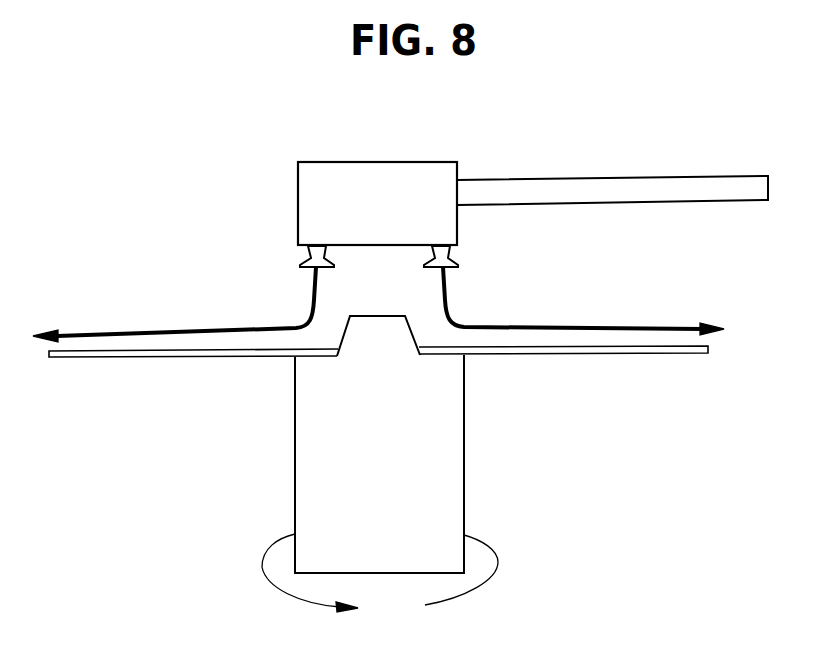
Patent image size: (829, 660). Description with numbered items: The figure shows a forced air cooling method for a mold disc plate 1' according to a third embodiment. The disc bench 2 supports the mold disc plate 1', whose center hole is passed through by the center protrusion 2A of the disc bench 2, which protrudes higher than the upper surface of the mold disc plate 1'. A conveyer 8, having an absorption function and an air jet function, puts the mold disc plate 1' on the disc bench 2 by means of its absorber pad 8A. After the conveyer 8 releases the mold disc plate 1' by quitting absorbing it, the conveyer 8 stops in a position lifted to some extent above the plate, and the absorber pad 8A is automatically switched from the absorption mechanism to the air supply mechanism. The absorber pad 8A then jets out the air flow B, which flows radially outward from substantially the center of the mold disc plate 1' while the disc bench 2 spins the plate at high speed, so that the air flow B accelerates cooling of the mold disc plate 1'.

The conveyer 8 is at (458, 170).
The absorber pad 8A is at (450, 256).
The air flow B is at (610, 326).
The mold disc plate 1' is at (378, 399).
The center protrusion 2A is at (358, 326).
The disc bench 2 is at (447, 468).